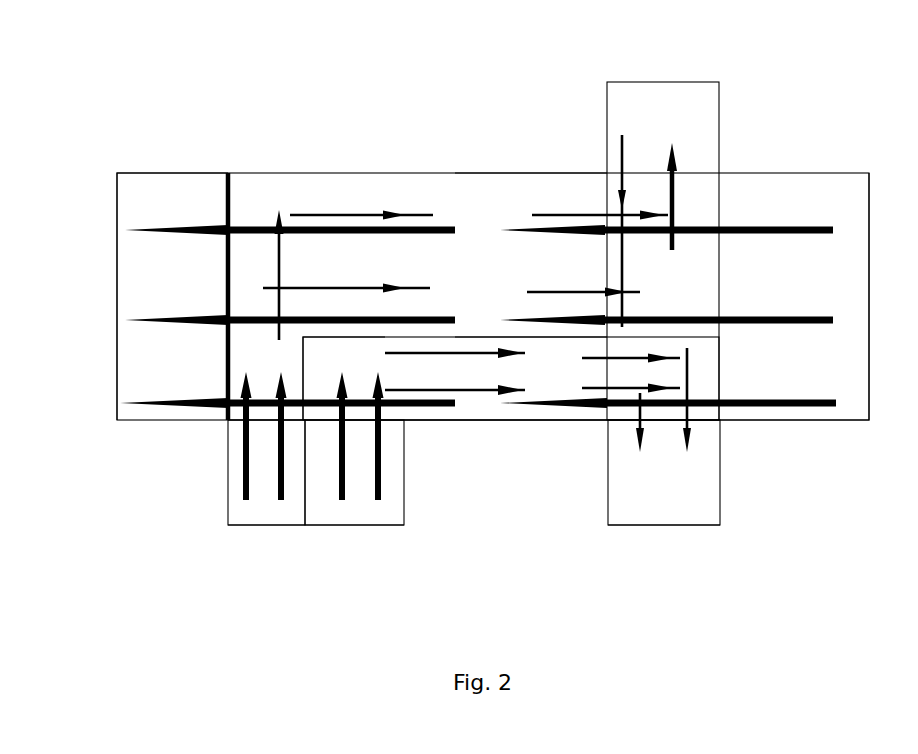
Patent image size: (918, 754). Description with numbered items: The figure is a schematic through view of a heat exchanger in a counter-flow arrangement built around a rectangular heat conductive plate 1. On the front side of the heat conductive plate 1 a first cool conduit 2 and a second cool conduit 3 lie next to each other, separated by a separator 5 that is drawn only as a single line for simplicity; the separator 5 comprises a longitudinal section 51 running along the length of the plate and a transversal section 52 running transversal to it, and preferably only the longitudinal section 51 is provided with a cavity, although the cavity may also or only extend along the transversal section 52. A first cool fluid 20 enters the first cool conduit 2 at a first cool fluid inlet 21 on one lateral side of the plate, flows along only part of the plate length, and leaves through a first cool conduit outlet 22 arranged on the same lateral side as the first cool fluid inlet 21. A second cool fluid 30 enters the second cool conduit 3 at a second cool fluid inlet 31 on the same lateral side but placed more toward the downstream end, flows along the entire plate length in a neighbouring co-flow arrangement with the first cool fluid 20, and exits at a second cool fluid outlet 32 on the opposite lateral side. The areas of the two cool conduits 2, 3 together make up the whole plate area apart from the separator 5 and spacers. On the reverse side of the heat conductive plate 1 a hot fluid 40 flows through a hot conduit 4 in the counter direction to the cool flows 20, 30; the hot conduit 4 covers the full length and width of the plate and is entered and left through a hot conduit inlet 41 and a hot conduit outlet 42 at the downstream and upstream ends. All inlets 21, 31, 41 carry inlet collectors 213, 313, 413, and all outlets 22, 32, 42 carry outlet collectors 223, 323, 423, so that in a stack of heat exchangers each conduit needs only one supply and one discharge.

The heat conductive plate 1 is at (405, 197).
The first cool conduit 2 is at (468, 410).
The second cool conduit 3 is at (495, 258).
The hot conduit 4 is at (248, 272).
The separator 5 is at (533, 338).
The first cool fluid 20 is at (493, 395).
The first cool fluid inlet 21 is at (390, 427).
The first cool conduit outlet 22 is at (705, 423).
The second cool fluid 30 is at (547, 213).
The second cool fluid inlet 31 is at (248, 455).
The second cool fluid outlet 32 is at (690, 172).
The hot fluid 40 is at (300, 213).
The hot conduit inlet 41 is at (720, 230).
The hot conduit outlet 42 is at (228, 203).
The longitudinal section 51 is at (362, 337).
The transversal section 52 is at (300, 367).
The inlet collector 213 is at (317, 497).
The outlet collector 223 is at (676, 485).
The inlet collector 313 is at (253, 497).
The outlet collector 323 is at (698, 118).
The inlet collector 413 is at (785, 358).
The outlet collector 423 is at (163, 203).